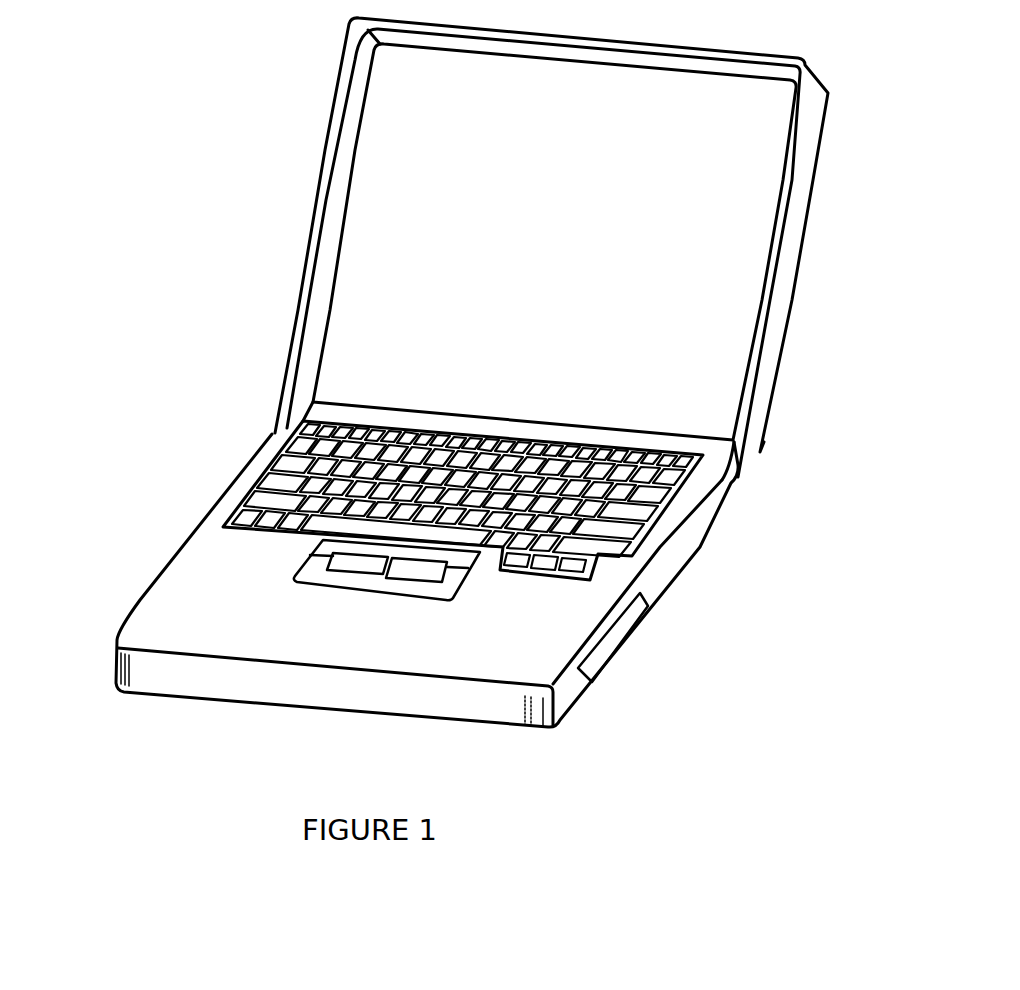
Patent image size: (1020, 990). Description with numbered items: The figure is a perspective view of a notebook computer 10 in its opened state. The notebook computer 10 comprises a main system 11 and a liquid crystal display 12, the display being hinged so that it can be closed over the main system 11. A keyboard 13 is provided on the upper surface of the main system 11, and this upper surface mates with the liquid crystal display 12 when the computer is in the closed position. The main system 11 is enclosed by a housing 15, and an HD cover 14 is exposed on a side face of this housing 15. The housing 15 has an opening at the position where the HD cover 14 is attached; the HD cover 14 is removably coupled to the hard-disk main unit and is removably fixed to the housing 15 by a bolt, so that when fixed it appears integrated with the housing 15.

The notebook computer 10 is at (203, 182).
The main system 11 is at (203, 520).
The liquid crystal display 12 is at (820, 162).
The keyboard 13 is at (257, 470).
The HD cover 14 is at (610, 647).
The housing 15 is at (190, 587).